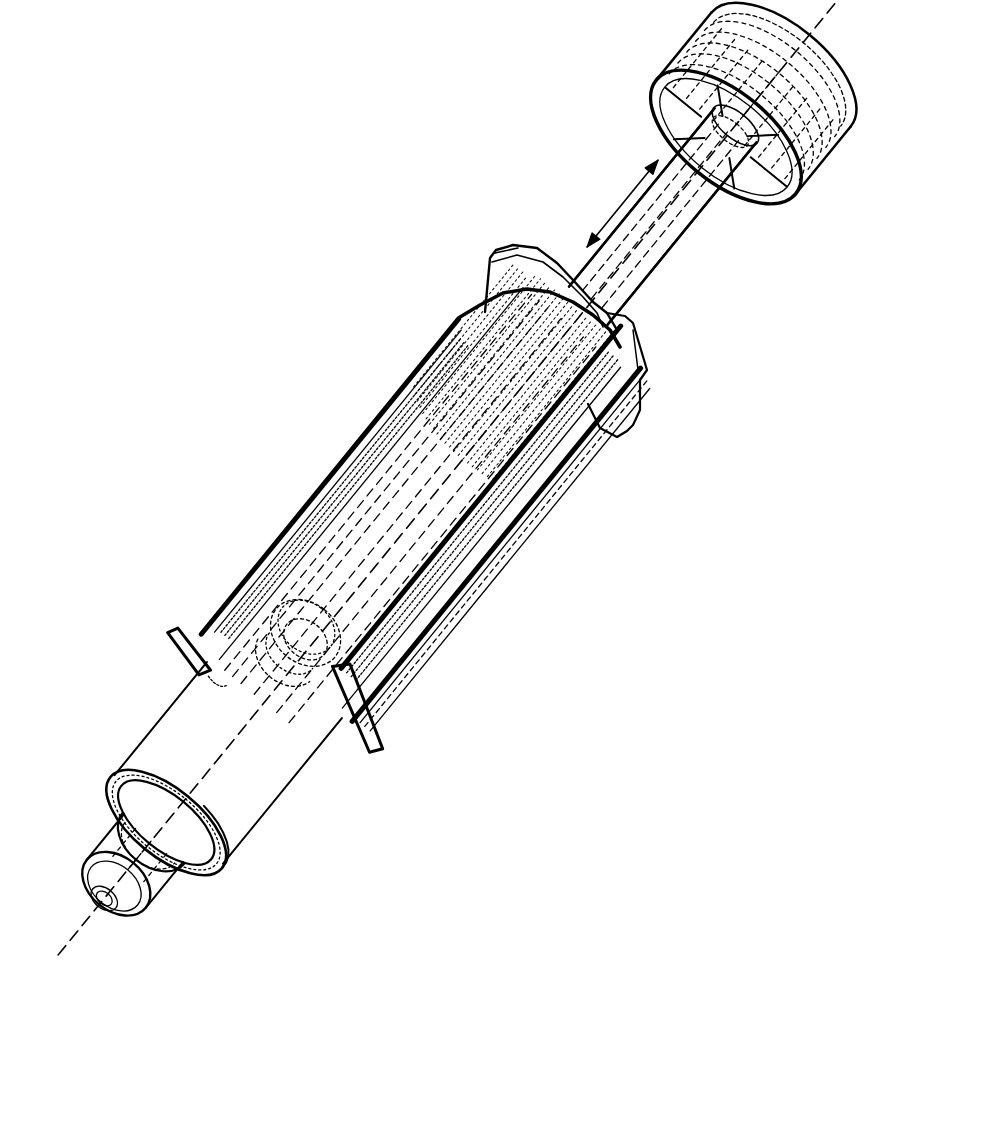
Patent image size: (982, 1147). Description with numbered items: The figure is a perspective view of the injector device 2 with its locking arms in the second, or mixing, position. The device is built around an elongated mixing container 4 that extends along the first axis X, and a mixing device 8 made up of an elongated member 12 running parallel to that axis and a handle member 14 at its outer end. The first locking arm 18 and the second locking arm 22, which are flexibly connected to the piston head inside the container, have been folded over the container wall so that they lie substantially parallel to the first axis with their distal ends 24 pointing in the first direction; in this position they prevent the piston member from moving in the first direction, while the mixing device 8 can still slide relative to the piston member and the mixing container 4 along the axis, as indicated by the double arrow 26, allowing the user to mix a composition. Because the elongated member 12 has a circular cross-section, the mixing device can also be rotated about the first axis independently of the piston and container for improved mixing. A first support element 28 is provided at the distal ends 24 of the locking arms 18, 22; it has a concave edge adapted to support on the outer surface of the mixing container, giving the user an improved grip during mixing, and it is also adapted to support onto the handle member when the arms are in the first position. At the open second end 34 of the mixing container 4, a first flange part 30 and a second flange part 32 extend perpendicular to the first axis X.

The injector device 2 is at (460, 519).
The mixing container 4 is at (257, 828).
The mixing device 8 is at (645, 288).
The elongated member 12 is at (697, 226).
The handle member 14 is at (700, 43).
The first locking arm 18 is at (229, 597).
The second locking arm 22 is at (462, 607).
The distal ends 24 is at (178, 636).
The double arrow 26 is at (627, 190).
The first support element 28 is at (372, 720).
The first flange part 30 is at (490, 249).
The second flange part 32 is at (641, 419).
The open second end 34 is at (646, 345).